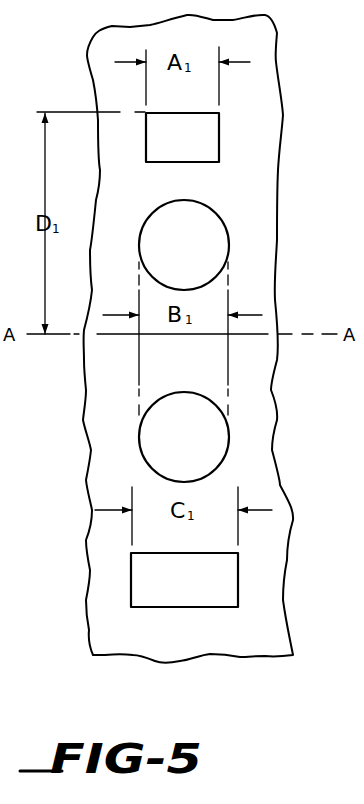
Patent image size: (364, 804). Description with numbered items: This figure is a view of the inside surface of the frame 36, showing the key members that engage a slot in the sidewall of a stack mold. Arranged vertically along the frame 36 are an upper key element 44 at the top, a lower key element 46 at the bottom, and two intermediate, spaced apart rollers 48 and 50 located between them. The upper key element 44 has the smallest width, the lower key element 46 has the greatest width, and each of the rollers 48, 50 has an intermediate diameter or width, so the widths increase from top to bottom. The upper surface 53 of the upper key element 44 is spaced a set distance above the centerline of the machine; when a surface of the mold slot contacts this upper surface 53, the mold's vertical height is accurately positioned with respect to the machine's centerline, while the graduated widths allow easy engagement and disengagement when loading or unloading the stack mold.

The blank plate 36 is at (107, 413).
The upper key element 44 is at (210, 140).
The lower key element 46 is at (220, 590).
The roller 48 is at (215, 243).
The roller 50 is at (218, 448).
The upper surface 53 is at (163, 112).